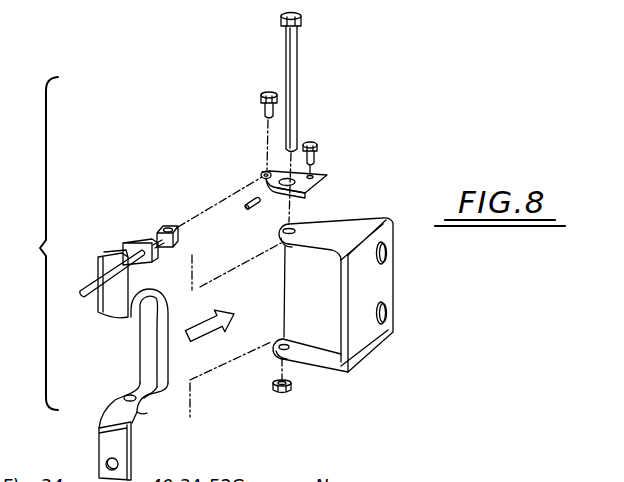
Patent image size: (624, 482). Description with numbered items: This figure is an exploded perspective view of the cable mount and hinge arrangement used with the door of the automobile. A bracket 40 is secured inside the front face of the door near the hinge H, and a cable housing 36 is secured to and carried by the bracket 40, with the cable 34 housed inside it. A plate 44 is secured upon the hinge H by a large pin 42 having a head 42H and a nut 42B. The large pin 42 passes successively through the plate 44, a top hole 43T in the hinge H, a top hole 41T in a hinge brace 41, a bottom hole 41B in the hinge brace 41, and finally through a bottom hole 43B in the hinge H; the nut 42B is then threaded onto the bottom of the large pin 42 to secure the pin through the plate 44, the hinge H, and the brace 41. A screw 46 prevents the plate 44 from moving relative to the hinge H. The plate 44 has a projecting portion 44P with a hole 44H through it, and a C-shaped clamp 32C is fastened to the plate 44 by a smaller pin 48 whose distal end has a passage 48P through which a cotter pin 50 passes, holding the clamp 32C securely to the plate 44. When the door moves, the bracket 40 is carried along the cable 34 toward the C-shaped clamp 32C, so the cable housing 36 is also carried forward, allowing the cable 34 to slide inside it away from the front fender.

The head 42H is at (302, 19).
The large pin 42 is at (297, 90).
The smaller pin 48 is at (265, 92).
The passage 48P is at (264, 115).
The screw 46 is at (315, 144).
The plate 44 is at (331, 178).
The hole 44H is at (264, 172).
The projecting portion 44P is at (262, 178).
The cotter pin 50 is at (250, 209).
The hinge H is at (351, 228).
The top hole 43T is at (294, 240).
The bottom hole 43B is at (294, 350).
The nut 42B is at (273, 390).
The C-shaped clamp 32C is at (158, 226).
The cable 34 is at (152, 242).
The bracket 40 is at (104, 254).
The cable housing 36 is at (148, 262).
The top hole 41T is at (165, 304).
The hinge brace 41 is at (112, 395).
The bottom hole 41B is at (137, 411).